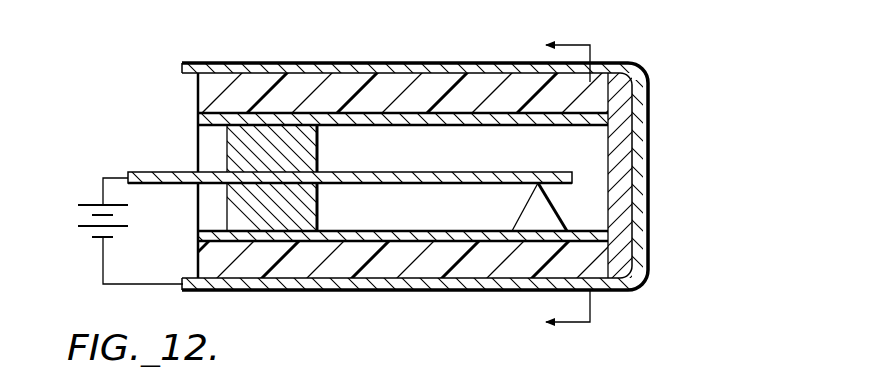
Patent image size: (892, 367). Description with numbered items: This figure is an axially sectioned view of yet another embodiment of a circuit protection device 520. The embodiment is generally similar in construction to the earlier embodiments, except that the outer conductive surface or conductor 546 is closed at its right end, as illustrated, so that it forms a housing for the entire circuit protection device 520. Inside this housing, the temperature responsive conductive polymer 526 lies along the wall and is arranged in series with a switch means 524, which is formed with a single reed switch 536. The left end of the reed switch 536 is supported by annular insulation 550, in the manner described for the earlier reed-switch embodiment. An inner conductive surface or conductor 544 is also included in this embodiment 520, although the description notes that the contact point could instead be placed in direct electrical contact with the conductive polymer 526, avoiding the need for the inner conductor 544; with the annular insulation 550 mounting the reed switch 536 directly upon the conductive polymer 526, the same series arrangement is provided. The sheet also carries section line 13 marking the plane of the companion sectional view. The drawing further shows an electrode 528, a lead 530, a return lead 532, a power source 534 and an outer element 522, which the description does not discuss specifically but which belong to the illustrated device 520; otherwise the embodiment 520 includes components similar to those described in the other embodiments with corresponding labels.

The circuit protection device 520 is at (446, 183).
The outer housing 522 is at (652, 240).
The switch means 524 is at (588, 153).
The conductive polymer 526 is at (324, 85).
The electrode 528 is at (419, 170).
The lead wire 530 is at (115, 176).
The return lead 532 is at (118, 285).
The power source 534 is at (101, 255).
The reed switch 536 is at (514, 172).
The inner conductive surface or conductor 544 is at (387, 128).
The outer conductive surface or conductor 546 is at (391, 65).
The annular insulation 550 is at (308, 210).
The section line 13- 13 is at (551, 186).